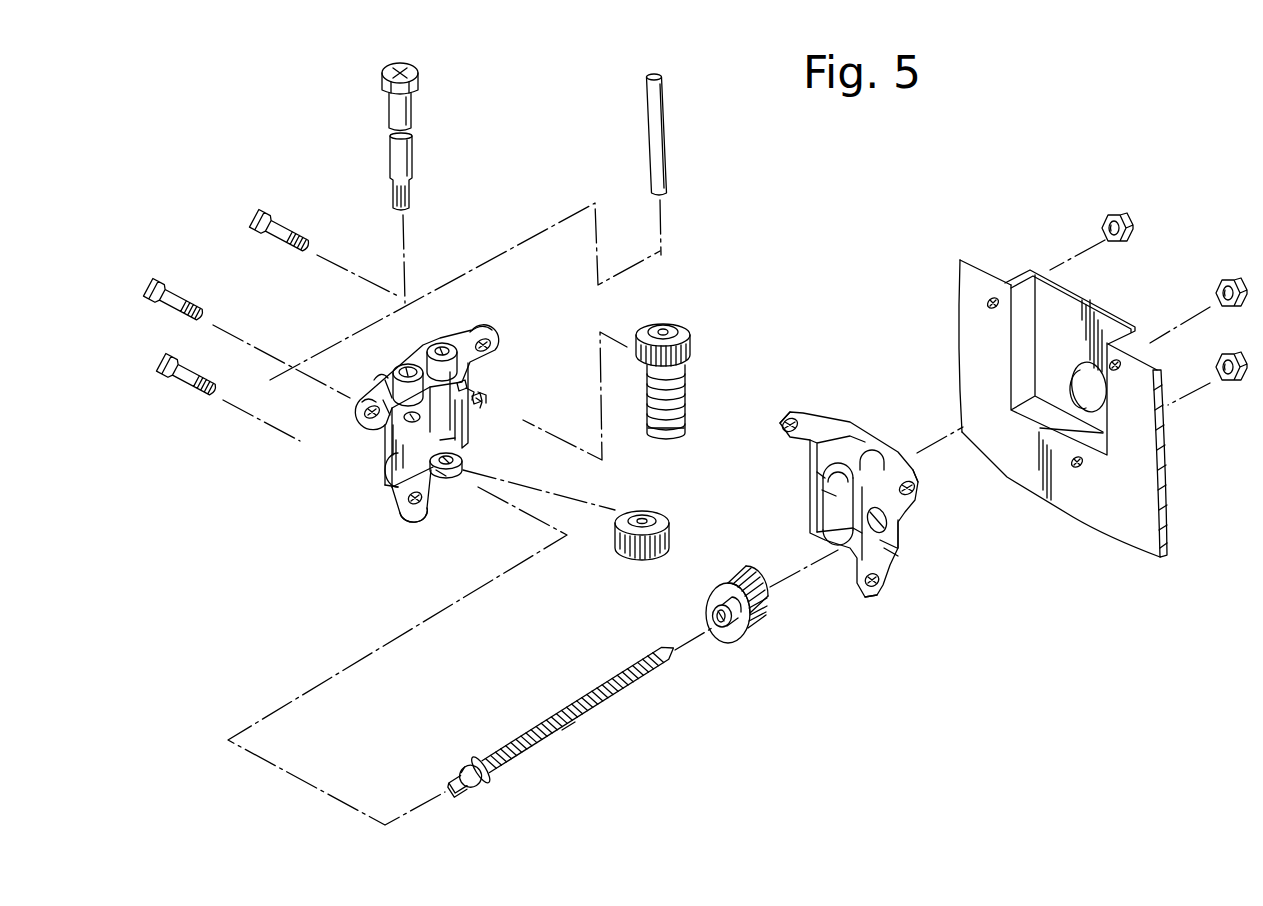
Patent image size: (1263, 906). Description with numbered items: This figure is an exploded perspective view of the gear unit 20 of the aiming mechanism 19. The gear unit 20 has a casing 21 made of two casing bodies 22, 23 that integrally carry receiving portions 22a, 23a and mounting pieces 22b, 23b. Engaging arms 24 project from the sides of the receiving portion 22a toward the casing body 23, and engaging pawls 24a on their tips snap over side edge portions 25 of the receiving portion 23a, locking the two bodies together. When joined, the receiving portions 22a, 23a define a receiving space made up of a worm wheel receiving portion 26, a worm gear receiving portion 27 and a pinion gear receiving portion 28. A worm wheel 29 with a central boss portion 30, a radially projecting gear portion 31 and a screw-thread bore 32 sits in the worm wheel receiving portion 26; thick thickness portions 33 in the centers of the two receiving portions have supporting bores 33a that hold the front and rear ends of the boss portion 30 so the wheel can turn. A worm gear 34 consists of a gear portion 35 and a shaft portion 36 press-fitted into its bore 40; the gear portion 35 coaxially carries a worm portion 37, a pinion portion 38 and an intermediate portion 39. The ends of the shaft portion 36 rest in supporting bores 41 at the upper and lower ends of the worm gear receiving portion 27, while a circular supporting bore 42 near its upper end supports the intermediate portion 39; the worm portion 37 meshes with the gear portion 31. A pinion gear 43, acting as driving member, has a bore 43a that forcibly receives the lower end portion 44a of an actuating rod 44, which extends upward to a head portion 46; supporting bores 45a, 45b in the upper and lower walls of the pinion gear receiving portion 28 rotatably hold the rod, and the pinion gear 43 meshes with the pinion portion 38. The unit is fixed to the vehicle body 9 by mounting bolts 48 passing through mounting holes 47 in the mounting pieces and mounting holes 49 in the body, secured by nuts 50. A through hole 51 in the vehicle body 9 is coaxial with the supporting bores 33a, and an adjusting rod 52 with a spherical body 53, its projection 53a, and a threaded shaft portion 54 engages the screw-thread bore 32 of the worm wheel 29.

The vehicle body 9 is at (1135, 540).
The aiming mechanism 19 is at (330, 152).
The gear unit 20 is at (384, 264).
The casing 21 is at (388, 330).
The casing body 22 is at (392, 362).
The receiving portion 22a is at (460, 443).
The mounting pieces 22b is at (490, 336).
The casing body 23 is at (850, 420).
The receiving portion 23a is at (830, 510).
The mounting pieces 23b is at (780, 430).
The engaging arms 24 is at (482, 394).
The engaging pawls 24a is at (480, 405).
The side edge portions 25 is at (812, 476).
The worm wheel receiving portion 26 is at (444, 482).
The worm gear receiving portion 27 is at (458, 410).
The pinion gear receiving portion 28 is at (378, 375).
The worm wheel 29 is at (766, 606).
The boss portion 30 is at (743, 590).
The gear portion 31 is at (748, 618).
The screw-thread bore 32 is at (721, 628).
The thick thickness portions 33 is at (440, 455).
The supporting bores 33a is at (380, 447).
The worm gear 34 is at (677, 395).
The gear portion 35 is at (674, 410).
The shaft portion 36 is at (662, 95).
The worm portion 37 is at (680, 430).
The pinion portion 38 is at (690, 345).
The intermediate portion 39 is at (680, 372).
The bore 40 is at (665, 336).
The supporting bores 41 is at (444, 345).
The circular supporting bore 42 is at (472, 392).
The pinion gear 43 is at (622, 540).
The bore 43a is at (643, 515).
The actuating rod 44 is at (415, 112).
The lower end portion 44a is at (410, 195).
The supporting bore 45a is at (408, 366).
The supporting bore 45b is at (380, 405).
The head portion 46 is at (420, 72).
The mounting holes 47 is at (490, 343).
The mounting bolts 48 is at (270, 215).
The mounting holes 49 is at (991, 310).
The nuts 50 is at (1113, 212).
The through hole 51 is at (1083, 370).
The adjusting rod 52 is at (592, 702).
The spherical body 53 is at (466, 758).
The projection 53a is at (445, 782).
The shaft portion 54 is at (570, 727).